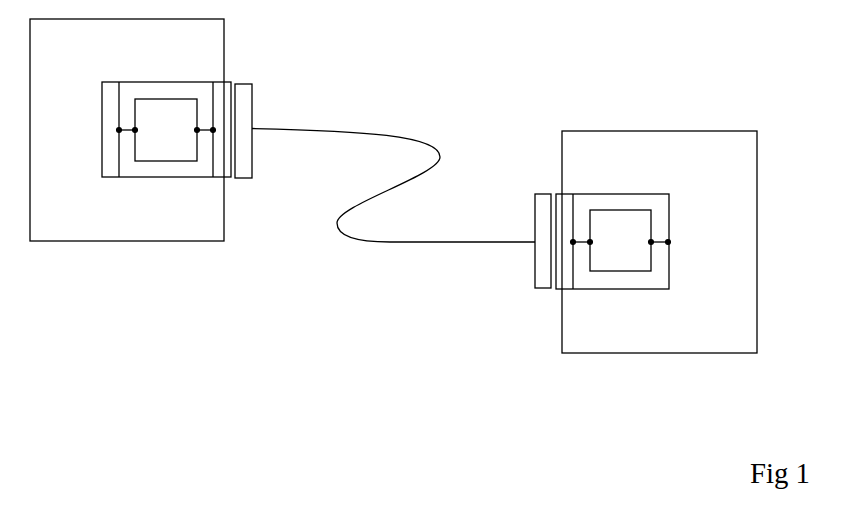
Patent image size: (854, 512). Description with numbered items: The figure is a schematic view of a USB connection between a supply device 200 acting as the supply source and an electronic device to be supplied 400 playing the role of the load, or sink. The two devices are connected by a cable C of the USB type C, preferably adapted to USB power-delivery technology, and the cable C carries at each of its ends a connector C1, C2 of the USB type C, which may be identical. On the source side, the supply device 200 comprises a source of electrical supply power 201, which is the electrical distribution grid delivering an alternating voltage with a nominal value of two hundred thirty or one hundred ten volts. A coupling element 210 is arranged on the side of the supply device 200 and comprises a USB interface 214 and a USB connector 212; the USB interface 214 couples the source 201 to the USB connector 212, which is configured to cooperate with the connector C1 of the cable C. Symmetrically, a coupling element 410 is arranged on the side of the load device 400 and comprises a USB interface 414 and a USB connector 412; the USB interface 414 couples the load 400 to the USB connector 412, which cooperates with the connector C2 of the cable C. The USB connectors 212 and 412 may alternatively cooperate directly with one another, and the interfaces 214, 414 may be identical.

The supply device 200 is at (67, 233).
The source of electrical supply power 201 is at (110, 173).
The coupling element 210 is at (195, 177).
The USB connector 212 is at (224, 173).
The USB interface 214 is at (174, 158).
The connector C1 is at (243, 87).
The cable C is at (410, 138).
The connector C2 is at (537, 196).
The electronic device to be supplied 400 is at (713, 338).
The coupling element 410 is at (600, 289).
The USB connector 412 is at (562, 282).
The USB interface 414 is at (627, 265).